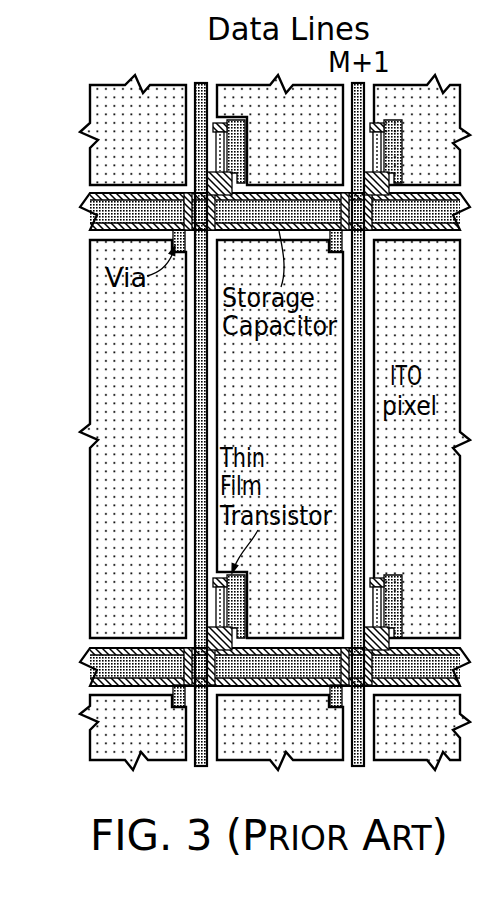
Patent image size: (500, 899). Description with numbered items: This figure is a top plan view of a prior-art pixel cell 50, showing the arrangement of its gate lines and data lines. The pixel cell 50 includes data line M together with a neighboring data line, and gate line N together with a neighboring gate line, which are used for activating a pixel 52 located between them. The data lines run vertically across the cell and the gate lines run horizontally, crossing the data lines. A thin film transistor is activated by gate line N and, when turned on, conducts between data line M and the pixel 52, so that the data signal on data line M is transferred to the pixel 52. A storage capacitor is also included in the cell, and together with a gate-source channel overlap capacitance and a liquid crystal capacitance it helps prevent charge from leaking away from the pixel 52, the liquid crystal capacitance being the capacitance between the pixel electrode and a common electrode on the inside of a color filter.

The pixel cell 50 is at (217, 371).
The pixel 52 is at (291, 393).
The data line M is at (207, 406).
The gate line N is at (257, 667).